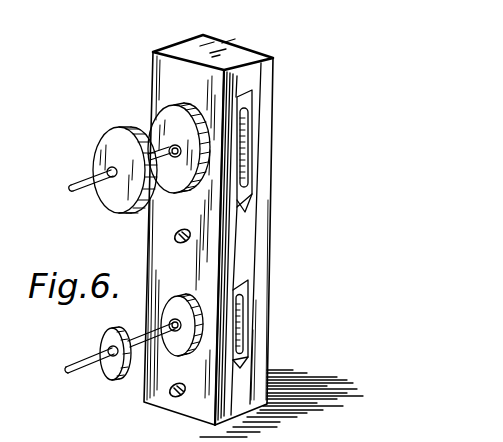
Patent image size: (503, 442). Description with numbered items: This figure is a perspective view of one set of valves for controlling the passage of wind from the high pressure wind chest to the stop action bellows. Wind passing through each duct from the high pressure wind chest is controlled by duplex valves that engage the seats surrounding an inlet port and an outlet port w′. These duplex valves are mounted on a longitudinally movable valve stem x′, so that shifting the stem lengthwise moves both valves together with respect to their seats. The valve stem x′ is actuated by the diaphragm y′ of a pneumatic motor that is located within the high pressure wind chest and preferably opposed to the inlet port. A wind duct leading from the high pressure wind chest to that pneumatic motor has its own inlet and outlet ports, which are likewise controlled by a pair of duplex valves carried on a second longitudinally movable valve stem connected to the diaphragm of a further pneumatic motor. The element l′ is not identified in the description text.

The gear wheel l′ is at (175, 120).
The longitudinally movable valve stem x′ is at (152, 146).
The outlet port w′ is at (108, 158).
The diaphragm y′ is at (246, 155).